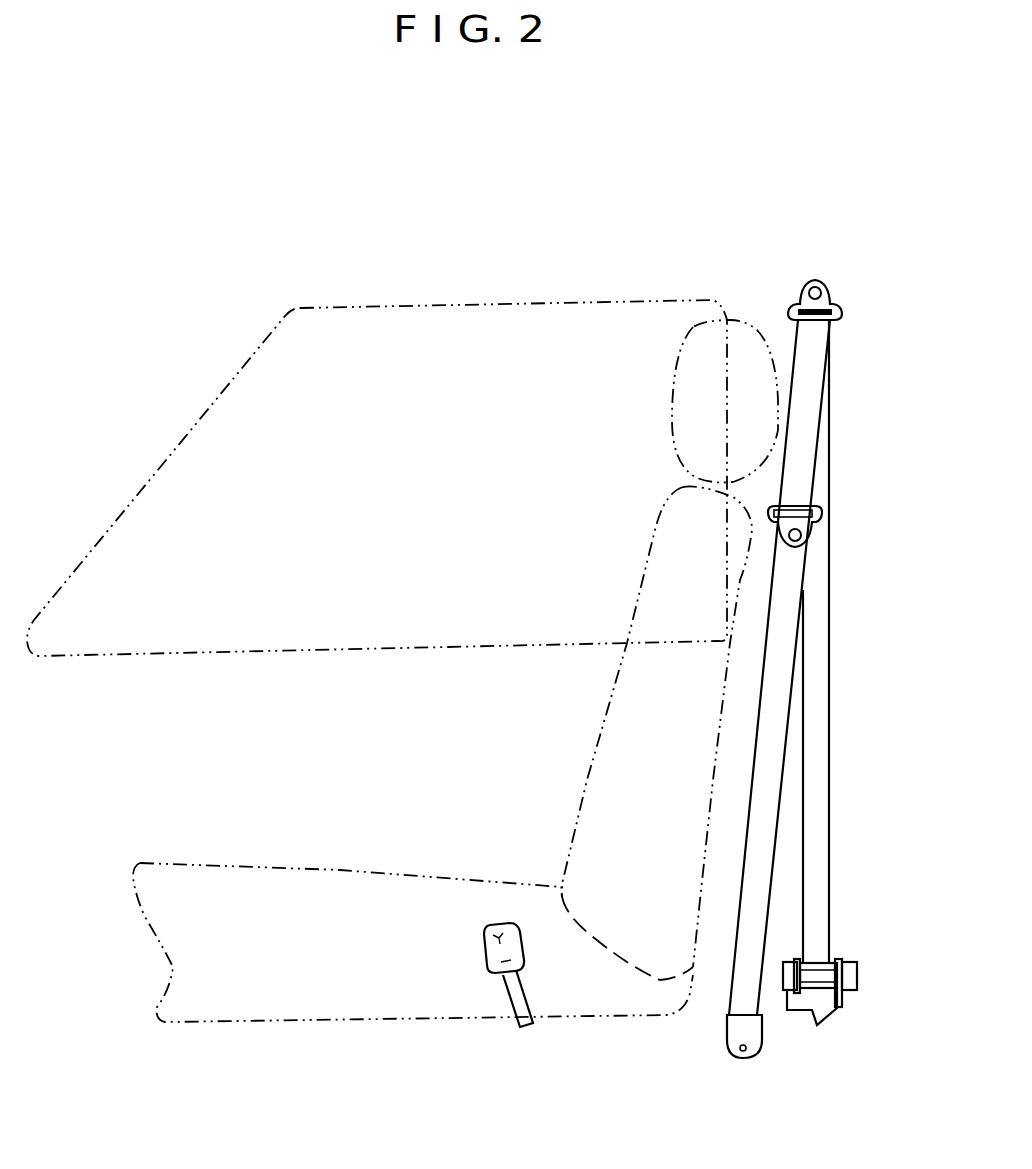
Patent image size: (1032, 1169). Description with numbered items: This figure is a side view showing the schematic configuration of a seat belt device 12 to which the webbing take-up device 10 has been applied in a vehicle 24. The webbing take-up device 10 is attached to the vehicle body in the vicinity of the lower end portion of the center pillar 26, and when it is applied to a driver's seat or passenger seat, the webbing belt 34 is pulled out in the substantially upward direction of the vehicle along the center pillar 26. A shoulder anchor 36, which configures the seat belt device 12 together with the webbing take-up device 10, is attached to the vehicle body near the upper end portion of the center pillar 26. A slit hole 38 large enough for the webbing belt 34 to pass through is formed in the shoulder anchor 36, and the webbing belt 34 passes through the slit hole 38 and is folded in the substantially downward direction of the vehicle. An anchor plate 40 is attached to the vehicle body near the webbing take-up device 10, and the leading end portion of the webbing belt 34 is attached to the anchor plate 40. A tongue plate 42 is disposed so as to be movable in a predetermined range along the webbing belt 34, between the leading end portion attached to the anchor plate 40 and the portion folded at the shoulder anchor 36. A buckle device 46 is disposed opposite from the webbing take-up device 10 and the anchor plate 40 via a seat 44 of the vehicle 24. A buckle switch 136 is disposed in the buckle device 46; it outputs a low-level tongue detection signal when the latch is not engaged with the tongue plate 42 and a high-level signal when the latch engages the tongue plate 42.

The webbing take-up device 10 is at (868, 937).
The seat belt device 12 is at (868, 677).
The vehicle 24 is at (197, 263).
The center pillar 26 is at (768, 300).
The webbing belt 34 is at (826, 852).
The shoulder anchor 36 is at (833, 300).
The slit hole 38 is at (813, 322).
The anchor plate 40 is at (732, 1028).
The tongue plate 42 is at (798, 508).
The seat 44 is at (340, 872).
The buckle device 46 is at (498, 978).
The buckle switch 136 is at (482, 928).